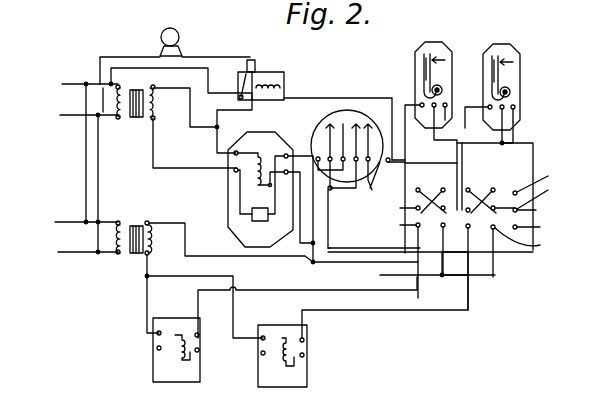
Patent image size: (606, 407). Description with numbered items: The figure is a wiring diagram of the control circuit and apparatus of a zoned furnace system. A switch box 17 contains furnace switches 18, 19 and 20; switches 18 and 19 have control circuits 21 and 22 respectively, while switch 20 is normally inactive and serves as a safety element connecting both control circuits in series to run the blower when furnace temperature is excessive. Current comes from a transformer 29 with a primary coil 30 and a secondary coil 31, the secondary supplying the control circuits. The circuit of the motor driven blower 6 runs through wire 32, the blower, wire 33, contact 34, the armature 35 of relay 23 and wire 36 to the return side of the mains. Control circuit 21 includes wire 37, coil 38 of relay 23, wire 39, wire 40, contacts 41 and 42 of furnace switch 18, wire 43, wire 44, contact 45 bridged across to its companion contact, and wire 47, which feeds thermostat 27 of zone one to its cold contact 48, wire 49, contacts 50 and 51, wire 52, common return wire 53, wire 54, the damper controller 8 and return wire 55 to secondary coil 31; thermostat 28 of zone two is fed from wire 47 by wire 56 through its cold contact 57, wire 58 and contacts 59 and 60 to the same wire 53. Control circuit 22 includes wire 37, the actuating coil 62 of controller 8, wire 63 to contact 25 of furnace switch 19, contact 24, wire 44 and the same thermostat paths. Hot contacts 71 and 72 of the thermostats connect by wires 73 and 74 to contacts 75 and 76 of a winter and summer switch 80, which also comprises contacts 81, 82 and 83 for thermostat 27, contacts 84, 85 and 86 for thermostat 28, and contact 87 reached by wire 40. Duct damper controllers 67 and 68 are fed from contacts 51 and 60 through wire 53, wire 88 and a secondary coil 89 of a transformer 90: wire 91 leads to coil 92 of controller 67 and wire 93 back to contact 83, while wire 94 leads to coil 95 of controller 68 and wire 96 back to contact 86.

The motor driven blower 6 is at (162, 33).
The damper controller 8 is at (228, 232).
The switch box 17 is at (392, 96).
The furnace switch 18 is at (372, 124).
The furnace switch 19 is at (329, 122).
The furnace switch 20 is at (345, 122).
The control circuit 21 is at (332, 97).
The control circuit 22 is at (228, 168).
The relay 23 is at (278, 72).
The contact 24 is at (312, 142).
The contact 25 is at (314, 134).
The thermostat 27 is at (420, 40).
The thermostat 28 is at (514, 44).
The transformer 29 is at (134, 120).
The primary coil 30 is at (109, 102).
The secondary coil 31 is at (156, 102).
The wire 32 is at (112, 56).
The wire 33 is at (232, 56).
The contact 34 is at (254, 60).
The armature 35 is at (238, 77).
The wire 36 is at (200, 69).
The wire 37 is at (208, 105).
The coil 38 is at (282, 86).
The wire 39 is at (355, 97).
The wire 40 is at (372, 181).
The contact 41 is at (405, 150).
The contact 42 is at (407, 128).
The wire 43 is at (343, 190).
The wire 44 is at (332, 238).
The contact 45 is at (534, 226).
The wire 47 is at (430, 150).
The cold contact 48 is at (447, 68).
The wire 49 is at (457, 153).
The contact 50 is at (433, 200).
The contact 51 is at (430, 260).
The wire 52 is at (423, 264).
The wire 53 is at (376, 268).
The wire 54 is at (295, 243).
The wire 55 is at (168, 168).
The wire 56 is at (482, 128).
The cold contact 57 is at (516, 78).
The wire 58 is at (514, 132).
The contact 59 is at (536, 197).
The contact 60 is at (525, 240).
The actuating coil 62 is at (260, 153).
The wire 63 is at (311, 156).
The duct damper controller 67 is at (153, 362).
The duct damper controller 68 is at (258, 376).
The hot contact 71 is at (424, 60).
The hot contact 72 is at (490, 84).
The wire 73 is at (385, 170).
The wire 74 is at (462, 153).
The contact 75 is at (402, 201).
The contact 76 is at (481, 206).
The winter and summer switch 80 is at (544, 210).
The contact 81 is at (422, 182).
The contact 82 is at (443, 188).
The contact 83 is at (400, 224).
The contact 84 is at (468, 188).
The contact 85 is at (493, 188).
The contact 86 is at (470, 267).
The contact 87 is at (536, 181).
The wire 88 is at (260, 258).
The secondary coil 89 is at (152, 238).
The transformer 90 is at (131, 256).
The wire 91 is at (147, 305).
The coil 92 is at (177, 334).
The wire 93 is at (198, 305).
The wire 94 is at (207, 266).
The coil 95 is at (285, 336).
The wire 96 is at (350, 310).